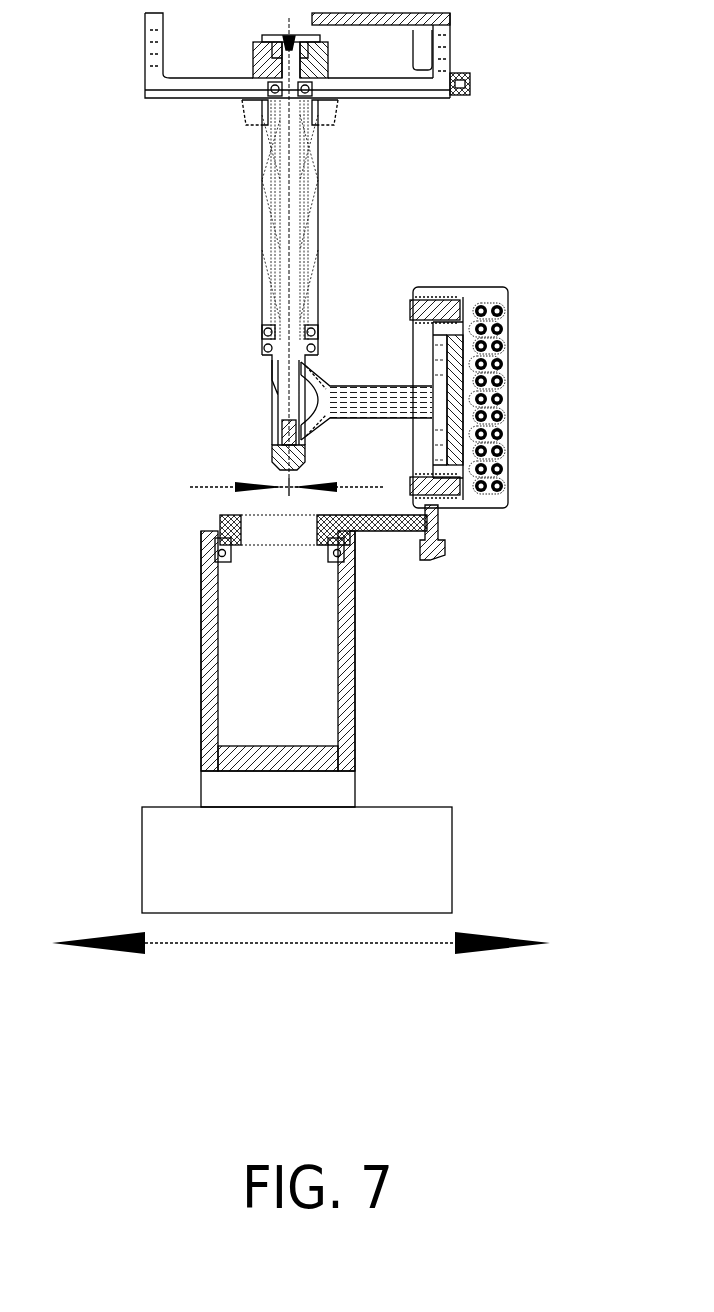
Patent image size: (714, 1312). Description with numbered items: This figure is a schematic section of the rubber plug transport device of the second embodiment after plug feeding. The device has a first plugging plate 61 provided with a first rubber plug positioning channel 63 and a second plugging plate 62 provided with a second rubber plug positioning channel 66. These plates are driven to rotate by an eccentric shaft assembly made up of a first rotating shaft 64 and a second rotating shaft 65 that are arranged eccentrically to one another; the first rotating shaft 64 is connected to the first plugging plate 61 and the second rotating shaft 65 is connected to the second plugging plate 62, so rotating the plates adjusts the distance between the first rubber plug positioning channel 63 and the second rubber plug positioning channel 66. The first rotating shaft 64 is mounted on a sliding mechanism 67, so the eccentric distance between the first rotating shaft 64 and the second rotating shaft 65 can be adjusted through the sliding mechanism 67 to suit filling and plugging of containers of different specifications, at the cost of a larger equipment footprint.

The first plugging plate 61 is at (440, 300).
The second plugging plate 62 is at (488, 508).
The first rubber plug positioning channel 63 is at (510, 300).
The first rotating shaft 64 is at (205, 549).
The second rotating shaft 65 is at (310, 257).
The second rubber plug positioning channel 66 is at (490, 302).
The sliding mechanism 67 is at (368, 835).